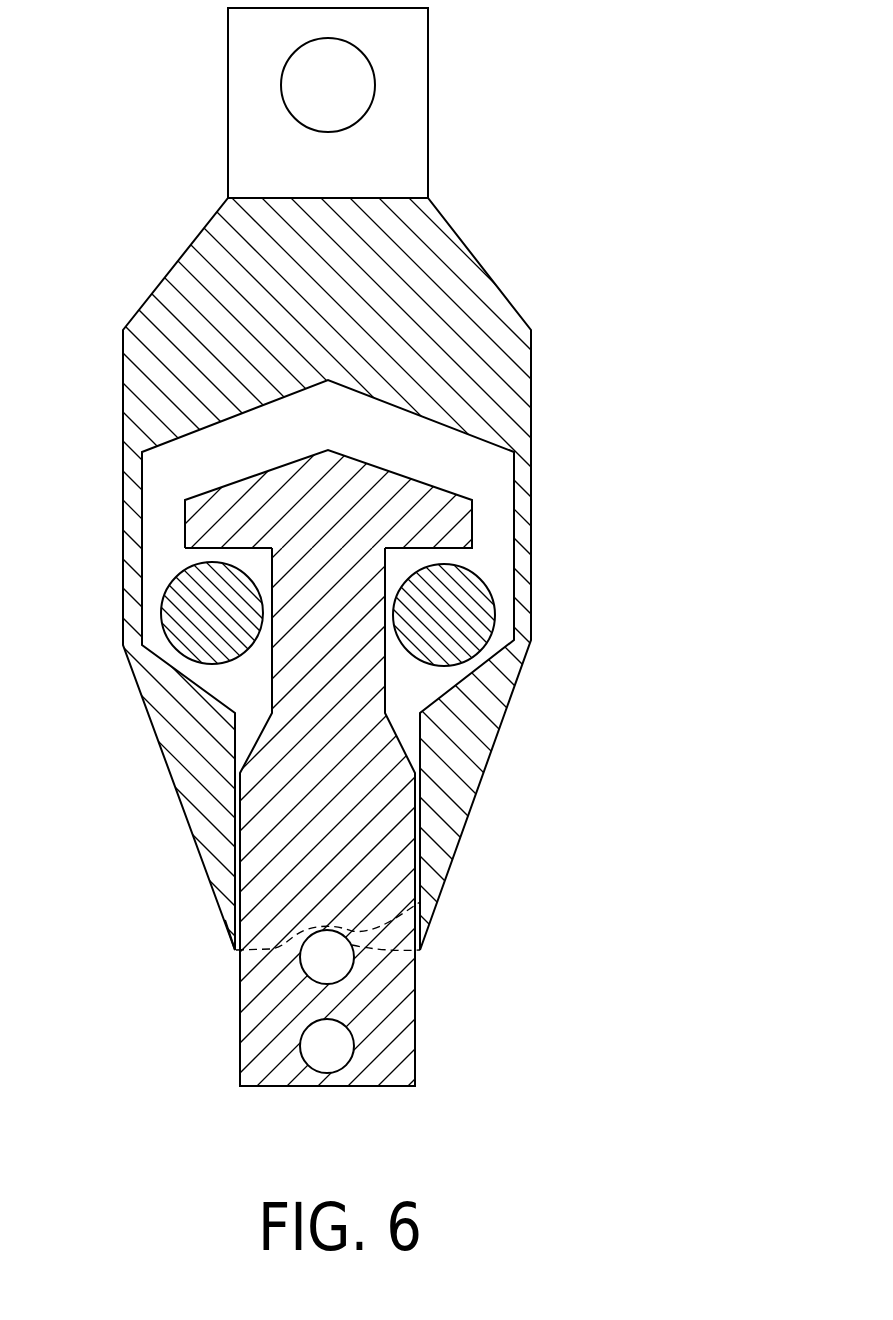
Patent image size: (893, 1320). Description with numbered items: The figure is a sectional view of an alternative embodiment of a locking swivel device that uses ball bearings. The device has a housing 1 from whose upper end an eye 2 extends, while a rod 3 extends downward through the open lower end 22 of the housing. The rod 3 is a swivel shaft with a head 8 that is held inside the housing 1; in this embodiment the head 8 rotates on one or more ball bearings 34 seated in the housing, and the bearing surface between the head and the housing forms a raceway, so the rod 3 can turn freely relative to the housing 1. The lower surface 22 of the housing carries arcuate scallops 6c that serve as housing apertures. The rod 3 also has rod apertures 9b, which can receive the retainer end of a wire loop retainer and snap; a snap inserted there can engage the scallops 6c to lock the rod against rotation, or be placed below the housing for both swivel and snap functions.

The housing 1 is at (157, 408).
The eye 2 is at (396, 58).
The rod 3 is at (347, 858).
The head 8 is at (443, 518).
The ball bearings 34 is at (187, 630).
The rod aperture 9b is at (335, 967).
The arcuate scallops 6c is at (420, 902).
The open lower end 22 is at (233, 960).